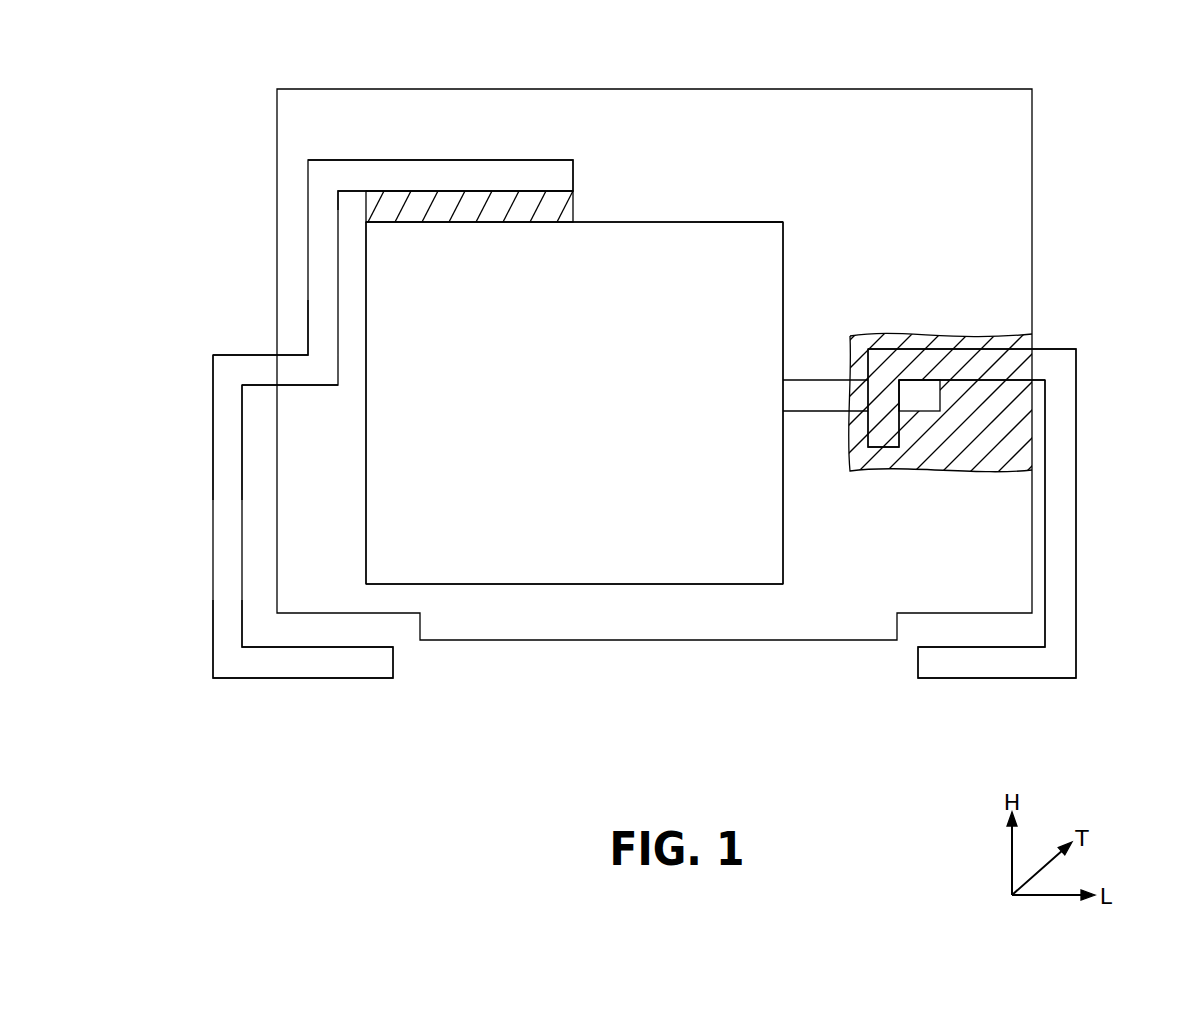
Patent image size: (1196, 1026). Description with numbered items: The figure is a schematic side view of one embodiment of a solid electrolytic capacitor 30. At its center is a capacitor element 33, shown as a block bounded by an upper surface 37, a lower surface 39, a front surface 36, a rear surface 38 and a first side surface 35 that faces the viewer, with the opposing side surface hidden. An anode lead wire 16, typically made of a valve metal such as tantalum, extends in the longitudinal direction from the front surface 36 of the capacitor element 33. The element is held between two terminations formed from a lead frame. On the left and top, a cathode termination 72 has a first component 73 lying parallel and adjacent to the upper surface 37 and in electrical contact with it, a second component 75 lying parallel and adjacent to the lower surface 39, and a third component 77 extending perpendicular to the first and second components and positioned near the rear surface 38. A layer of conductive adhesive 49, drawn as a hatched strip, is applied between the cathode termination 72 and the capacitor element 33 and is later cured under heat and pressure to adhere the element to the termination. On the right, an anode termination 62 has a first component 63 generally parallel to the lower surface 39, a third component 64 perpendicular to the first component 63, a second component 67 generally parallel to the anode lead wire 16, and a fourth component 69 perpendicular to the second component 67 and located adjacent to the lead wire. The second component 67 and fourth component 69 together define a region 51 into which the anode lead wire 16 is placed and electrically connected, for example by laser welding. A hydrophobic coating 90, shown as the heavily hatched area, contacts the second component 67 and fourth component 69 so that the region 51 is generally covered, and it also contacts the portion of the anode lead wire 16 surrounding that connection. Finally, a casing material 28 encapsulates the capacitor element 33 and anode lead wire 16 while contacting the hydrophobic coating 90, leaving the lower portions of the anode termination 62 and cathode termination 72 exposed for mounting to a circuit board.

The anode lead wire 16 is at (818, 393).
The casing material 28 is at (748, 123).
The capacitor 30 is at (1151, 117).
The capacitor element 33 is at (667, 222).
The first side surface 35 is at (537, 382).
The front surface 36 is at (783, 525).
The upper surface 37 is at (732, 222).
The rear surface 38 is at (366, 426).
The lower surface 39 is at (630, 584).
The conductive adhesive 49 is at (573, 203).
The region 51 is at (929, 406).
The anode termination 62 is at (1099, 598).
The first component 63 is at (990, 677).
The third component 64 is at (1078, 468).
The second component 67 is at (1017, 365).
The fourth component 69 is at (876, 473).
The cathode termination 72 is at (216, 582).
The first component 73 is at (432, 160).
The second component 75 is at (375, 678).
The third component 77 is at (308, 300).
The hydrophobic coating 90 is at (1005, 340).